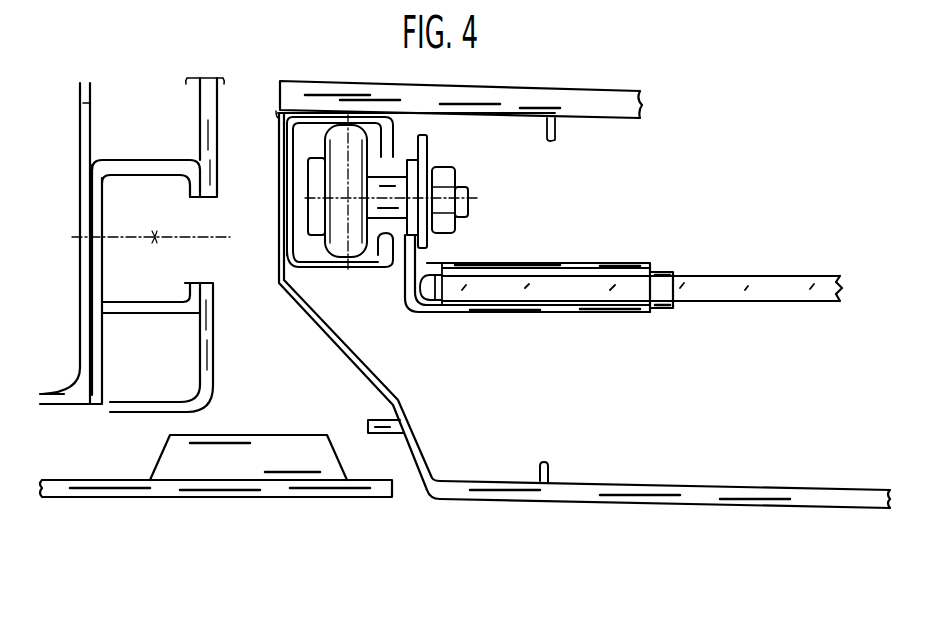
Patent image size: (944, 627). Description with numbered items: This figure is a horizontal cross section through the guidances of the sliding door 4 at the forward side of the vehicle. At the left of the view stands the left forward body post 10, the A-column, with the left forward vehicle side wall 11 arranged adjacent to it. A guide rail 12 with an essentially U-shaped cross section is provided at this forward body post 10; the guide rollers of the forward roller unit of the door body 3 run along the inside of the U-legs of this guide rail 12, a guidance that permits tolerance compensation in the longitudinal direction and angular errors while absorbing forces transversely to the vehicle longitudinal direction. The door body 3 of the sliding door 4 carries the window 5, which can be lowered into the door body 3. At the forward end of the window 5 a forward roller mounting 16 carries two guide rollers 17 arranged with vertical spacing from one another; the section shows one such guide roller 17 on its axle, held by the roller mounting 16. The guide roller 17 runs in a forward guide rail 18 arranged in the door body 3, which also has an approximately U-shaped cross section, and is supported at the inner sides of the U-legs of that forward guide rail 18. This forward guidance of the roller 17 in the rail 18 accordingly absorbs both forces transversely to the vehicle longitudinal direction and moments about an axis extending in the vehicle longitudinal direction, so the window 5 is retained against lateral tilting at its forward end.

The door body 3 is at (580, 493).
The sliding door 4 is at (727, 508).
The window 5 is at (788, 292).
The forward body post 10 is at (84, 103).
The forward vehicle side wall 11 is at (263, 488).
The guide rail 12 is at (145, 167).
The forward roller mounting 16 is at (478, 311).
The guide rollers 17 is at (356, 242).
The forward guide rail 18 is at (314, 264).